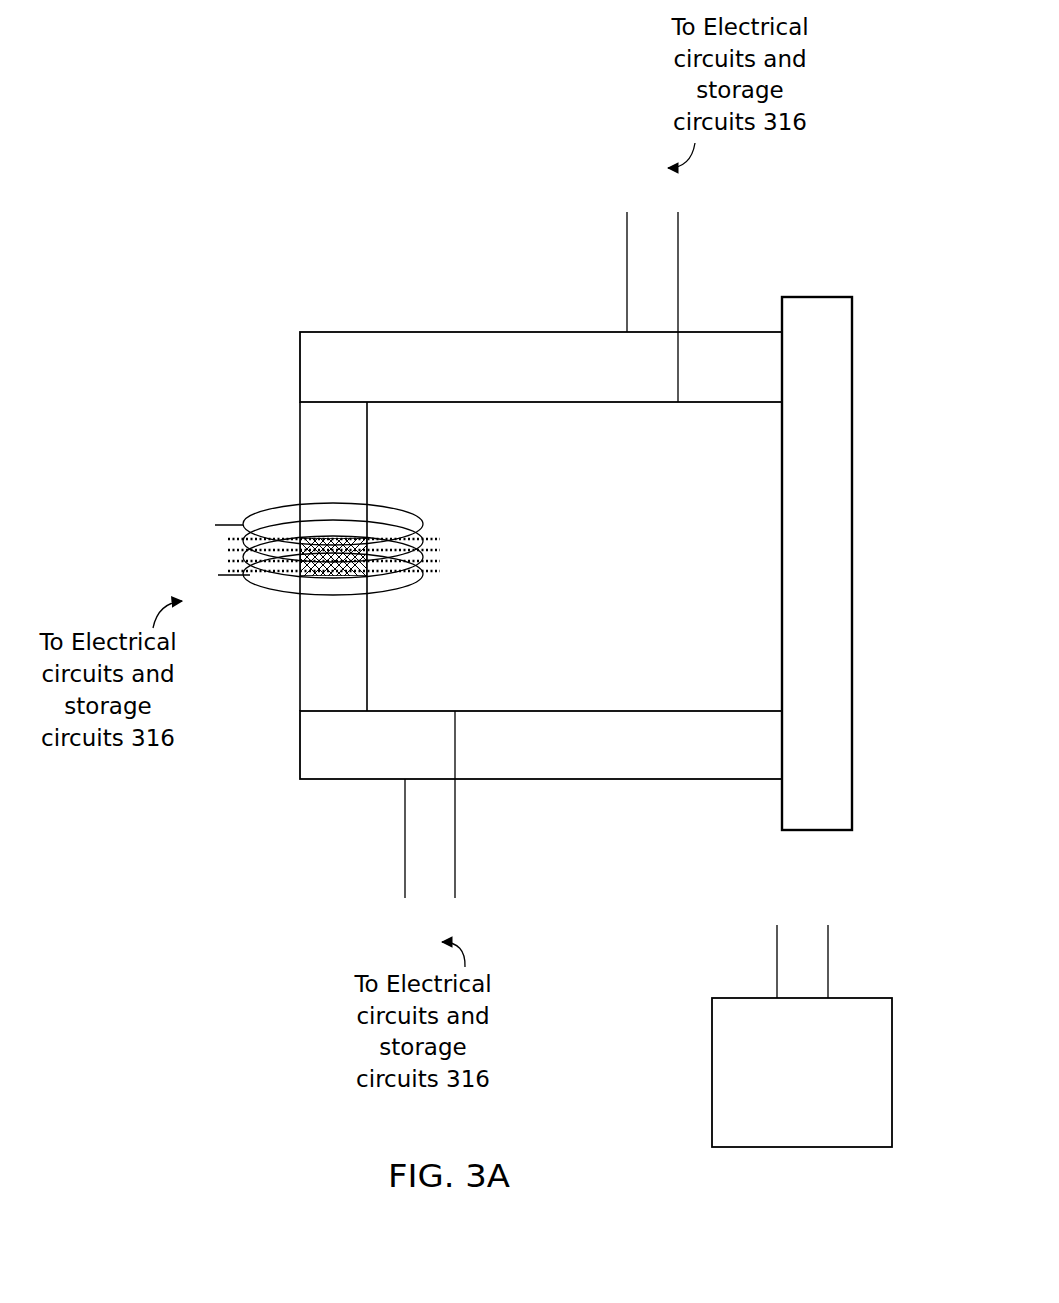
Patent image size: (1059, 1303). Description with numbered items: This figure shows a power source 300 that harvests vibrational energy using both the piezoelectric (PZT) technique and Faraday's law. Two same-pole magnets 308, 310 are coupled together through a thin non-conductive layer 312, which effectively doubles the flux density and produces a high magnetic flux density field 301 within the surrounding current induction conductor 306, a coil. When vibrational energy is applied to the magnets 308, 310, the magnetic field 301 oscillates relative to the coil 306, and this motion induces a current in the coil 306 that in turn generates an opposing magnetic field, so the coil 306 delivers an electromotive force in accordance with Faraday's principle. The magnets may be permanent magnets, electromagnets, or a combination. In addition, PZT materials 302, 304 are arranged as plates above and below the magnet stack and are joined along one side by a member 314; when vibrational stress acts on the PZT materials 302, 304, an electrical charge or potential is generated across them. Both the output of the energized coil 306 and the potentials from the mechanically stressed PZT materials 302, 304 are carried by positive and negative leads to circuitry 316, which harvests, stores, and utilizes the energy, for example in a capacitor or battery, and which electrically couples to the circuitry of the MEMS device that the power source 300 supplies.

The power source 300 is at (296, 167).
The high magnetic flux density field 301 is at (436, 574).
The PZT material 302 is at (541, 367).
The PZT material 304 is at (541, 745).
The current induction conductor 306 is at (420, 513).
The magnet 308 is at (333, 479).
The magnet 310 is at (333, 634).
The thin non-conductive layer 312 is at (298, 528).
The side plate 314 is at (817, 563).
The circuitry 316 is at (802, 1021).